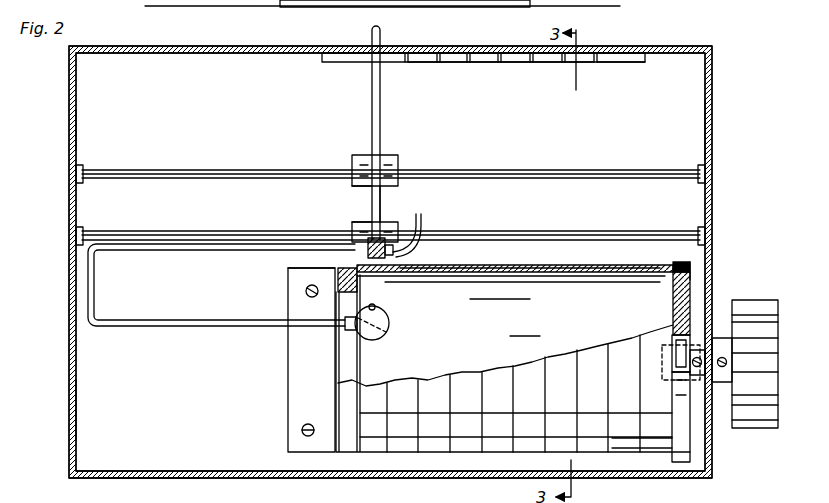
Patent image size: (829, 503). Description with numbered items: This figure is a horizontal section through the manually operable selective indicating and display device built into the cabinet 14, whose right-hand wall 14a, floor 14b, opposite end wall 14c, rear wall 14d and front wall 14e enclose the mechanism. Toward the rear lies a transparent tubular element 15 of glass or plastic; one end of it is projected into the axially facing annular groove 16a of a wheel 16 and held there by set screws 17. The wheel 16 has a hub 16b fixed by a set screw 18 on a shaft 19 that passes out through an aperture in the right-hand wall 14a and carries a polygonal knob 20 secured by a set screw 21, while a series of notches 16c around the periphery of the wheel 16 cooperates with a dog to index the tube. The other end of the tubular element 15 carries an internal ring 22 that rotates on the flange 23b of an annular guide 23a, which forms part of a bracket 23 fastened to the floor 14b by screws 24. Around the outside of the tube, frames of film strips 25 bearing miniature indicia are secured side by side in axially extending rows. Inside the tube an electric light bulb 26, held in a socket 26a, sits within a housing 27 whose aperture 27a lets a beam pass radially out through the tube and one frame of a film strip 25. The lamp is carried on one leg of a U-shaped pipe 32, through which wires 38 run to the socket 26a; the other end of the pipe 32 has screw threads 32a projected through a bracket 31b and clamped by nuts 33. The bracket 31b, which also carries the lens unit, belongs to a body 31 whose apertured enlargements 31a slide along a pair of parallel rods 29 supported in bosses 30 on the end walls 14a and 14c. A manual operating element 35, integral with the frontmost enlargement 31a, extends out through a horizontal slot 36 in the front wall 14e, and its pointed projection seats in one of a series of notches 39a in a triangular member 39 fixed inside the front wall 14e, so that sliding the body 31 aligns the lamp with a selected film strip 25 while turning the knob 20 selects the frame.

The cabinet 14 is at (702, 50).
The right-hand wall 14a is at (712, 128).
The floor 14b is at (96, 410).
The end wall 14c is at (70, 140).
The rear wall 14d is at (150, 490).
The front wall 14e is at (350, 9).
The tubular element 15 is at (626, 266).
The wheel 16 is at (672, 311).
The annular groove 16a is at (692, 274).
The hub 16b is at (690, 380).
The notches 16c is at (672, 446).
The set screws 17 is at (683, 265).
The set screw 18 is at (692, 362).
The shaft 19 is at (708, 384).
The knob 20 is at (746, 300).
The set screw 21 is at (727, 362).
The ring 22 is at (360, 279).
The bracket 23 is at (288, 392).
The annular guide 23a is at (290, 273).
The flange 23b is at (340, 292).
The screws 24 is at (305, 292).
The film strips 25 is at (536, 268).
The electric light bulb 26 is at (388, 322).
The socket 26a is at (351, 330).
The housing 27 is at (376, 340).
The aperture 27a is at (377, 307).
The parallel rods 29 is at (208, 200).
The bosses 30 is at (84, 228).
The body 31 is at (382, 200).
The enlargements 31a is at (361, 222).
The bracket 31b is at (383, 218).
The pipe 32 is at (188, 328).
The screw threads 32a is at (393, 255).
The nuts 33 is at (368, 248).
The manual operating element 35 is at (372, 100).
The slot 36 is at (414, 52).
The wires 38 is at (415, 233).
The member 39 is at (616, 62).
The notches 39a is at (555, 64).